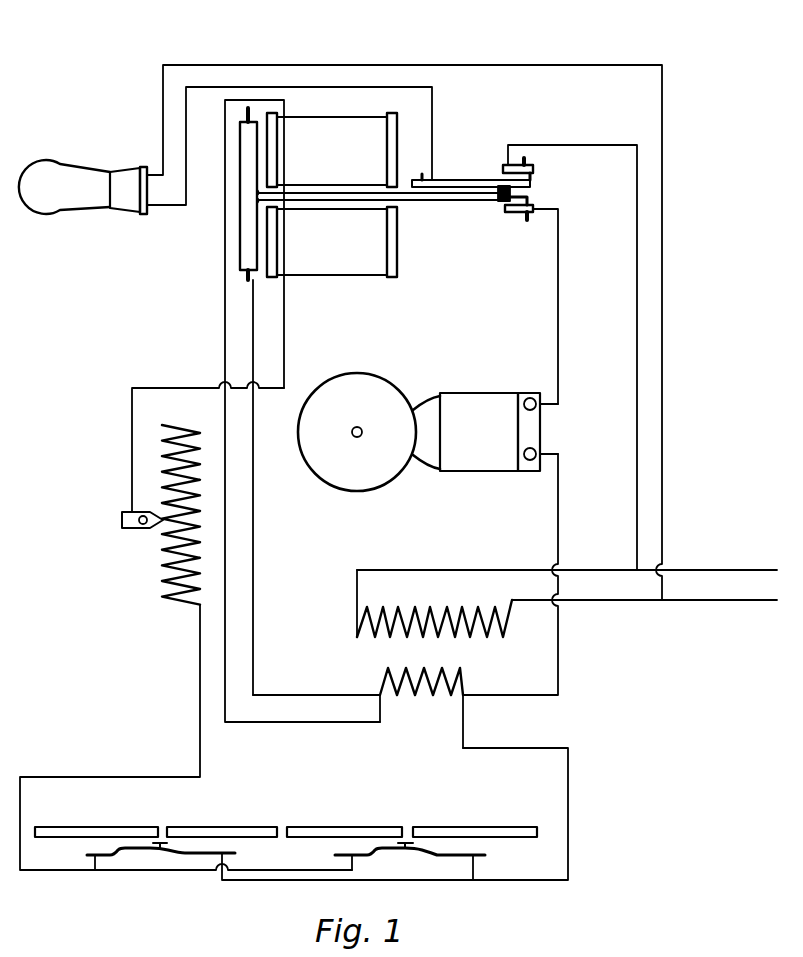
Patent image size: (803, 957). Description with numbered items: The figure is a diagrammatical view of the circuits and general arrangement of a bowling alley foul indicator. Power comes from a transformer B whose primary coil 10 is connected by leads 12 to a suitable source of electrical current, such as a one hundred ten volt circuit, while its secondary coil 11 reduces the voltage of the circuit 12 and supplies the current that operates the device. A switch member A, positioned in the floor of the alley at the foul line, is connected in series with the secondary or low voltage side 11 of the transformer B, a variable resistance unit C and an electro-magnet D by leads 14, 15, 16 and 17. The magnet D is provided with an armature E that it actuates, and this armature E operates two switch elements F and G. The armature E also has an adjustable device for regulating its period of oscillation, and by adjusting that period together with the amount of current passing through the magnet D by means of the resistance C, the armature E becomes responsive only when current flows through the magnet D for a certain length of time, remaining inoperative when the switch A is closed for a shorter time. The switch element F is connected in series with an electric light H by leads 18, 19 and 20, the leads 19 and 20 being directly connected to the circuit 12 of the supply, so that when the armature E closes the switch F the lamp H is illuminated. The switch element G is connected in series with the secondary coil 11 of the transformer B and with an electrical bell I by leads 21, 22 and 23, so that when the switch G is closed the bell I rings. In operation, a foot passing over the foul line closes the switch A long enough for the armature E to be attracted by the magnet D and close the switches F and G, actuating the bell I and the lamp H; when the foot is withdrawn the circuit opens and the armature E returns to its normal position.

The primary coil 10 is at (362, 618).
The secondary coil 11 is at (418, 720).
The leads 12 is at (693, 600).
The lead 14 is at (568, 805).
The lead 15 is at (300, 722).
The lead 16 is at (105, 777).
The lead 17 is at (170, 388).
The lead 18 is at (432, 130).
The lead 19 is at (500, 65).
The lead 20 is at (637, 341).
The lead 21 is at (558, 305).
The lead 22 is at (558, 530).
The lead 23 is at (258, 558).
The switch member A is at (295, 852).
The transformer B is at (417, 652).
The variable resistance unit C is at (163, 555).
The electro-magnet D is at (330, 120).
The armature E is at (248, 238).
The switch element F is at (515, 165).
The switch element G is at (522, 212).
The electric light H is at (68, 195).
The electrical bell I is at (472, 412).